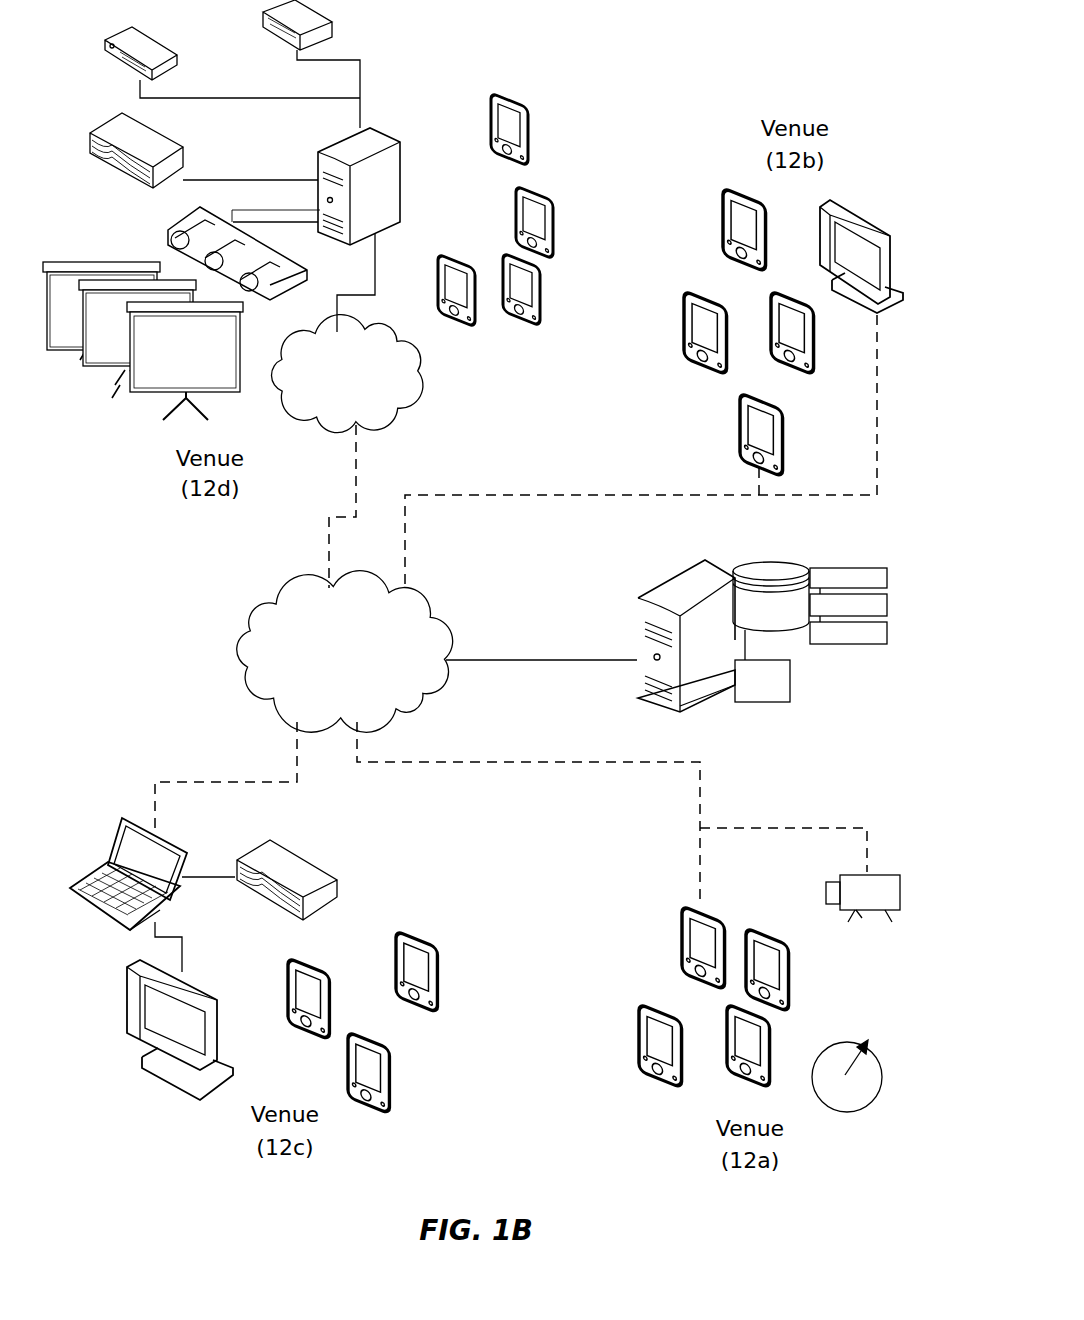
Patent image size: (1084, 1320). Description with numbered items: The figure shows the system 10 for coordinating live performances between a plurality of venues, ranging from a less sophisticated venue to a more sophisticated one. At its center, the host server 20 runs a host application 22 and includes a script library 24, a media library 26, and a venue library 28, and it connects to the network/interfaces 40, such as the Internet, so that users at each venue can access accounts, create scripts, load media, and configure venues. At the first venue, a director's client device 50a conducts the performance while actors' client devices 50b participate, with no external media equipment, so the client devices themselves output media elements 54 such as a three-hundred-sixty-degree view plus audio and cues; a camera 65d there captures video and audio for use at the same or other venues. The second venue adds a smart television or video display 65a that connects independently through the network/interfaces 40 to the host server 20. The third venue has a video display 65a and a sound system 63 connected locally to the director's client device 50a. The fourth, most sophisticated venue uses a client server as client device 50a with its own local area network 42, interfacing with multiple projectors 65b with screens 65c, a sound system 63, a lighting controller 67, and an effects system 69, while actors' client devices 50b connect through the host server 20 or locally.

The system 10 is at (920, 18).
The lighting controller 67 is at (105, 42).
The effects system 69 is at (263, 12).
The sound system 63 is at (100, 122).
The client device 50a is at (400, 195).
The client devices 50b is at (540, 285).
The projectors 65b is at (168, 231).
The screens 65c is at (172, 406).
The local area network 42 is at (418, 358).
The network/interfaces 40 is at (418, 688).
The host server 20 is at (638, 600).
The host application 22 is at (774, 702).
The script library 24 is at (887, 577).
The media library 26 is at (887, 604).
The venue library 28 is at (887, 632).
The video display 65a is at (890, 250).
The camera 65d is at (900, 890).
The media elements 54 is at (889, 1108).